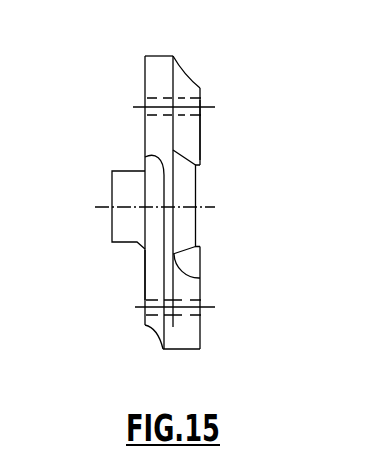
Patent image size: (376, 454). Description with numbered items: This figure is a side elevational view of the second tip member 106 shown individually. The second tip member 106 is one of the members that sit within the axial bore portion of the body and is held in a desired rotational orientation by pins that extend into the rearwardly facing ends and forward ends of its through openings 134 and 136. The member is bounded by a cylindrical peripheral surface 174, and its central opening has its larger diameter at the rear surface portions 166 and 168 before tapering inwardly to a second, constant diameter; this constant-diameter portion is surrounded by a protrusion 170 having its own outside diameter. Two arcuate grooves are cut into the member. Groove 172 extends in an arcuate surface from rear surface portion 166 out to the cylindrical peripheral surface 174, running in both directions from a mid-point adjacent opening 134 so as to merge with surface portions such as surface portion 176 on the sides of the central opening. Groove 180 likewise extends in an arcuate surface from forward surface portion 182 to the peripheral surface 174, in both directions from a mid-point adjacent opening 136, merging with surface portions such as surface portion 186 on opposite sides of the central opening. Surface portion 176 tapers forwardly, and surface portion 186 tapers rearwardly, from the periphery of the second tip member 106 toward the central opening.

The second tip member 106 is at (184, 359).
The through opening 134 is at (150, 101).
The through opening 136 is at (145, 301).
The rear surface portion 166 is at (200, 137).
The rear surface portion 168 is at (192, 287).
The protrusion 170 is at (122, 224).
The groove 172 is at (192, 78).
The cylindrical peripheral surface 174 is at (158, 68).
The surface portion 176 is at (192, 184).
The groove 180 is at (153, 336).
The forward surface portion 182 is at (145, 278).
The surface portion 186 is at (158, 187).